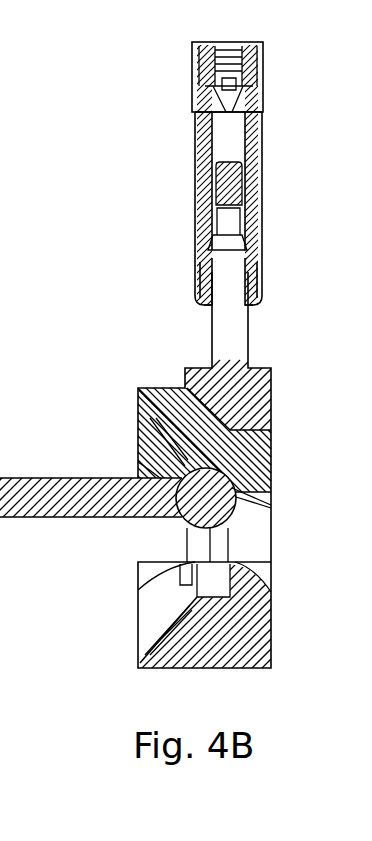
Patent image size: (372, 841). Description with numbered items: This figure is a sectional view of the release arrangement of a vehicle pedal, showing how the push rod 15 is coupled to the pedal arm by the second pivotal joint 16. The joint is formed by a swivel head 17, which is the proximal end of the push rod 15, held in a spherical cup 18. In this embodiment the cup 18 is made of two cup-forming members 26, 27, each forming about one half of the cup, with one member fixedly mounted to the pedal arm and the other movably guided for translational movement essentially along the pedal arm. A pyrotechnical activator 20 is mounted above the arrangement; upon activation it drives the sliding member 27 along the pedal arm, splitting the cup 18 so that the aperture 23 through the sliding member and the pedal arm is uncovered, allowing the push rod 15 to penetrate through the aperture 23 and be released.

The push rod 15 is at (88, 487).
The second pivotal joint 16 is at (151, 303).
The swivel head 17 is at (272, 498).
The spherical cup 18 is at (236, 456).
The pyrotechnical activator 20 is at (262, 140).
The aperture 23 is at (262, 541).
The cup-forming member 26 is at (272, 612).
The cup-forming member 27 is at (140, 390).